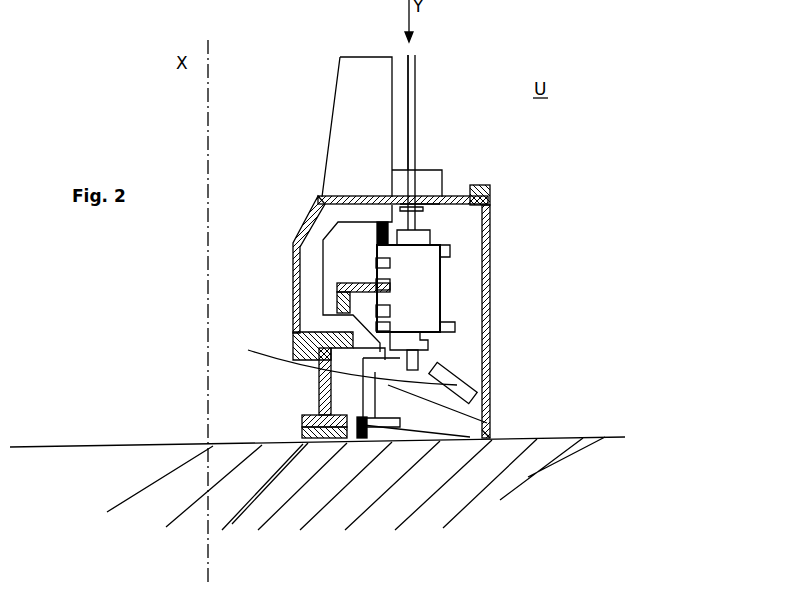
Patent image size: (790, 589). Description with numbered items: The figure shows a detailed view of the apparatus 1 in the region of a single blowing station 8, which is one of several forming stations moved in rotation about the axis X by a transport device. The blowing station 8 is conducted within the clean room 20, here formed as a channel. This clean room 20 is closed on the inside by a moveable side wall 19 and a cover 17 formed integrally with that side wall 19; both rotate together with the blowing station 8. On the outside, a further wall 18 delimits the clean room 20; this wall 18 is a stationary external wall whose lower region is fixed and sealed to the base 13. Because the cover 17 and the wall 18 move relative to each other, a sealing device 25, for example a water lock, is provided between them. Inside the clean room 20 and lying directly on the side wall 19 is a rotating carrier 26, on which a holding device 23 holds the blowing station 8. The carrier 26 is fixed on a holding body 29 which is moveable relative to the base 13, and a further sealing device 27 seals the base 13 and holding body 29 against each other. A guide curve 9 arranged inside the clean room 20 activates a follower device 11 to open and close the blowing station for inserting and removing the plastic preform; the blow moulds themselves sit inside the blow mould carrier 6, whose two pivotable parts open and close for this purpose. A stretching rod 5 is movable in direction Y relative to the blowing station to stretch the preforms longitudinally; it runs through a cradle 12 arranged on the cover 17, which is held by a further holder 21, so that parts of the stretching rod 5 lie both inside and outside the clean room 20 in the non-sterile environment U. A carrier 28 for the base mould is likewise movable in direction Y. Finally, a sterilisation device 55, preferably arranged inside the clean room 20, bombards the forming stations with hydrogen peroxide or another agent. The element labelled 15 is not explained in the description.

The apparatus 1 is at (297, 115).
The stretching rod 5 is at (410, 128).
The blow mould carrier 6 is at (430, 305).
The blowing station 8 is at (430, 272).
The guide curve 9 is at (440, 440).
The follower device 11 is at (490, 437).
The cradle 12 is at (428, 177).
The base 13 is at (590, 437).
The cover plate underside 15 is at (440, 206).
The cover 17 is at (362, 196).
The wall 18 is at (488, 248).
The side wall 19 is at (295, 275).
The clean room 20 is at (463, 380).
The holder 21 is at (380, 97).
The holding device 23 is at (357, 283).
The sealing device 25 is at (480, 190).
The carrier 26 is at (314, 324).
The sealing device 27 is at (300, 428).
The carrier for base mould 28 is at (420, 357).
The holding body 29 is at (320, 395).
The sterilisation device 55 is at (345, 359).